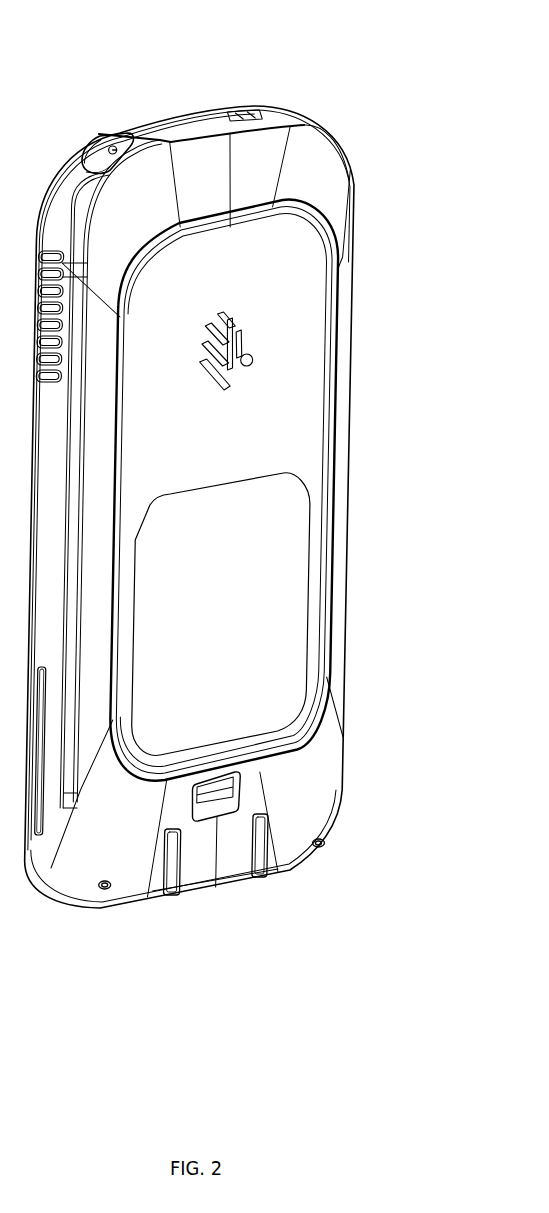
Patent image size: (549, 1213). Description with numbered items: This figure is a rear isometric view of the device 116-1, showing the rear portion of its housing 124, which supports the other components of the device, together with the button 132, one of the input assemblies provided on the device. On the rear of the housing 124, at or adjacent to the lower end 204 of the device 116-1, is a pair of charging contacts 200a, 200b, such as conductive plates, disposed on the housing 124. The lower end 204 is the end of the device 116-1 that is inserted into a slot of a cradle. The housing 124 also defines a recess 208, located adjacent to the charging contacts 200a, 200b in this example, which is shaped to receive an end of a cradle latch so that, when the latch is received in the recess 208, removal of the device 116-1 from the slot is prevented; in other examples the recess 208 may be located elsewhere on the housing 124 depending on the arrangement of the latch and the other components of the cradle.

The device 116-1 is at (352, 166).
The button 132 is at (117, 140).
The housing 124 is at (340, 368).
The lower end 204 is at (292, 870).
The recess 208 is at (222, 800).
The charging contact 200a is at (167, 873).
The charging contact 200b is at (257, 857).